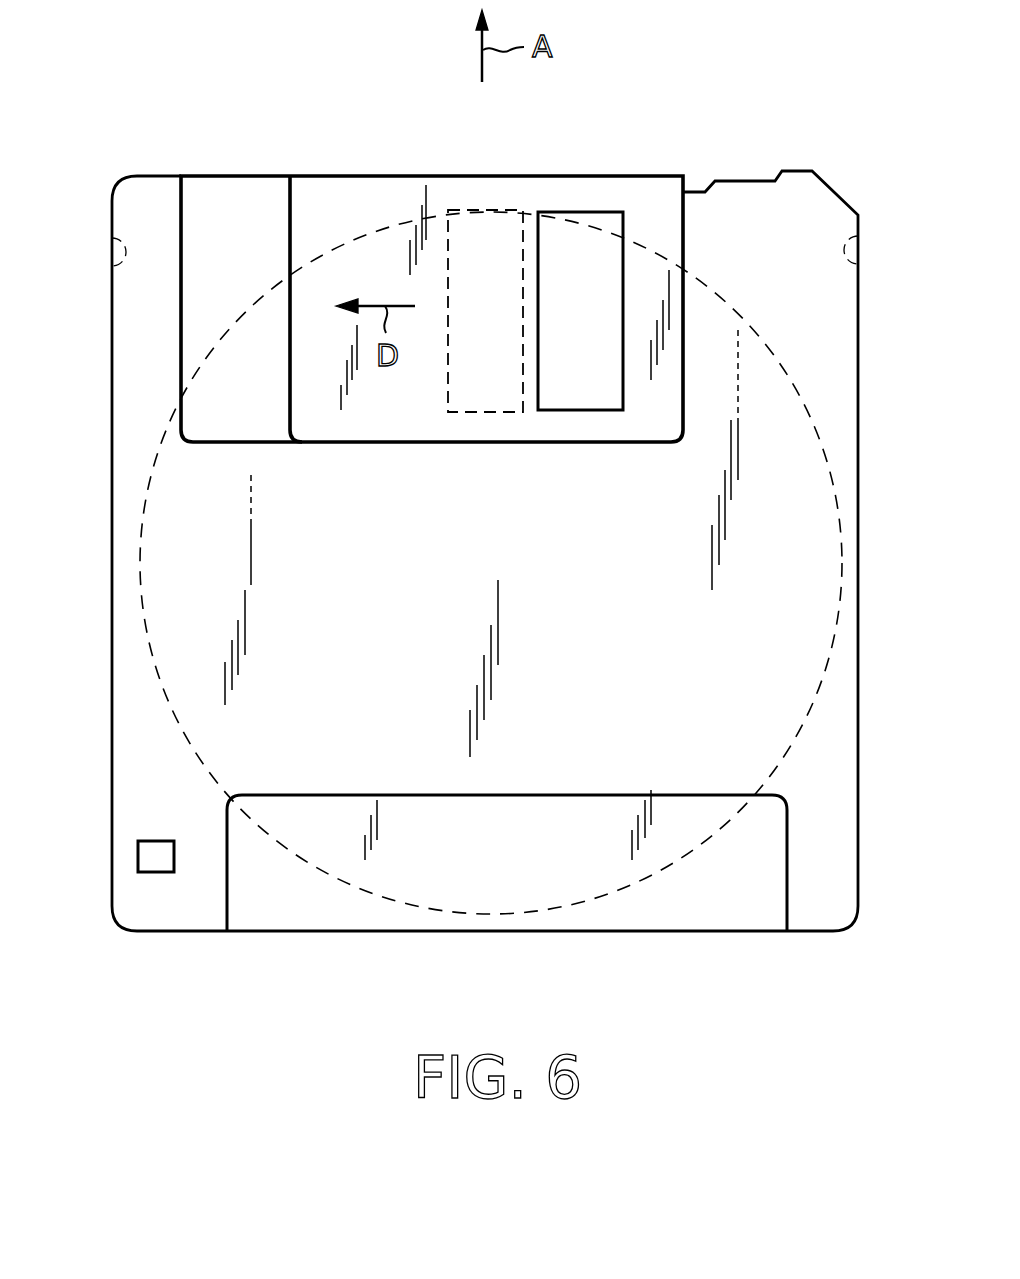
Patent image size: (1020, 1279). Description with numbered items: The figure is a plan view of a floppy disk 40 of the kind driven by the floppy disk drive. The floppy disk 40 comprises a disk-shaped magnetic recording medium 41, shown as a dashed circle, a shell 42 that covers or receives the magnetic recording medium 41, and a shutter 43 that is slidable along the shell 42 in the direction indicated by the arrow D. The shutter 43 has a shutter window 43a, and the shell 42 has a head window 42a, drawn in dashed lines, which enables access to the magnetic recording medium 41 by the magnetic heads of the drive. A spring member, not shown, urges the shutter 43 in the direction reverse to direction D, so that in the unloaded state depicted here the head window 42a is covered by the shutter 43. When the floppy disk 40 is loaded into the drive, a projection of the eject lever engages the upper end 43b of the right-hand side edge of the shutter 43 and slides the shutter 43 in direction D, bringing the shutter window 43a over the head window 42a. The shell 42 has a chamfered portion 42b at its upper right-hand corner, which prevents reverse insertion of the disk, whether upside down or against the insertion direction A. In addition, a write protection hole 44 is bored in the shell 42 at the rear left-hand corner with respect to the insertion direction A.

The floppy disk 40 is at (485, 547).
The magnetic recording medium 41 is at (798, 718).
The shell 42 is at (518, 524).
The head window 42a is at (518, 237).
The chamfered portion 42b is at (833, 193).
The shutter 43 is at (452, 293).
The shutter window 43a is at (535, 410).
The upper end of the right-hand side edge of the shutter 43b is at (688, 180).
The write protection hole 44 is at (138, 857).